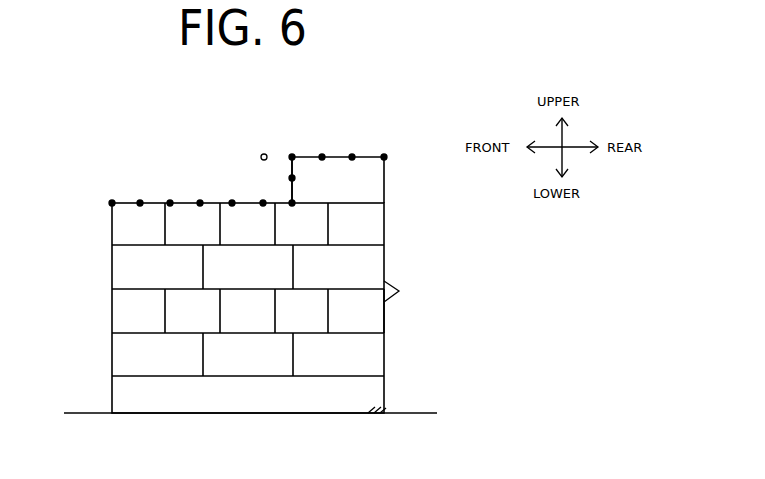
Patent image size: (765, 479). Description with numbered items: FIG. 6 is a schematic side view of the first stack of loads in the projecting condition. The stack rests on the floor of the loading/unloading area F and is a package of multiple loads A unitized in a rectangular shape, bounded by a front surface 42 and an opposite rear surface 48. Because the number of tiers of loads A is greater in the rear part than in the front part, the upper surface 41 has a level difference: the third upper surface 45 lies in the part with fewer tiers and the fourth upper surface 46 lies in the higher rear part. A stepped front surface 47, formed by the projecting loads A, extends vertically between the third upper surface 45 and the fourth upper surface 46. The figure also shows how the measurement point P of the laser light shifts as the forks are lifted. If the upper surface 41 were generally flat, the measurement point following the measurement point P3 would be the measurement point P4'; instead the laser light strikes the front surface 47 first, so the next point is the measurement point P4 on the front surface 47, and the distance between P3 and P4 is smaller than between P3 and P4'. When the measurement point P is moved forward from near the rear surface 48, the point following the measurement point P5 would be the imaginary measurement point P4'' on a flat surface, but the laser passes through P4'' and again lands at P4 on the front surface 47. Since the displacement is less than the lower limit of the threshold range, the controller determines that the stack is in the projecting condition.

The upper surface 41 is at (230, 134).
The front surface 42 is at (111, 308).
The third upper surface 45 is at (233, 202).
The fourth upper surface 46 is at (382, 155).
The front surface 47 is at (292, 175).
The rear surface 48 is at (387, 319).
The loads A is at (401, 293).
The loading/unloading area F is at (372, 412).
The measurement point P is at (140, 203).
The measurement point P3 is at (293, 206).
The measurement point P4 is at (314, 175).
The measurement point P4' is at (373, 188).
The imaginary measurement point P4'' is at (277, 120).
The measurement point P5 is at (292, 156).